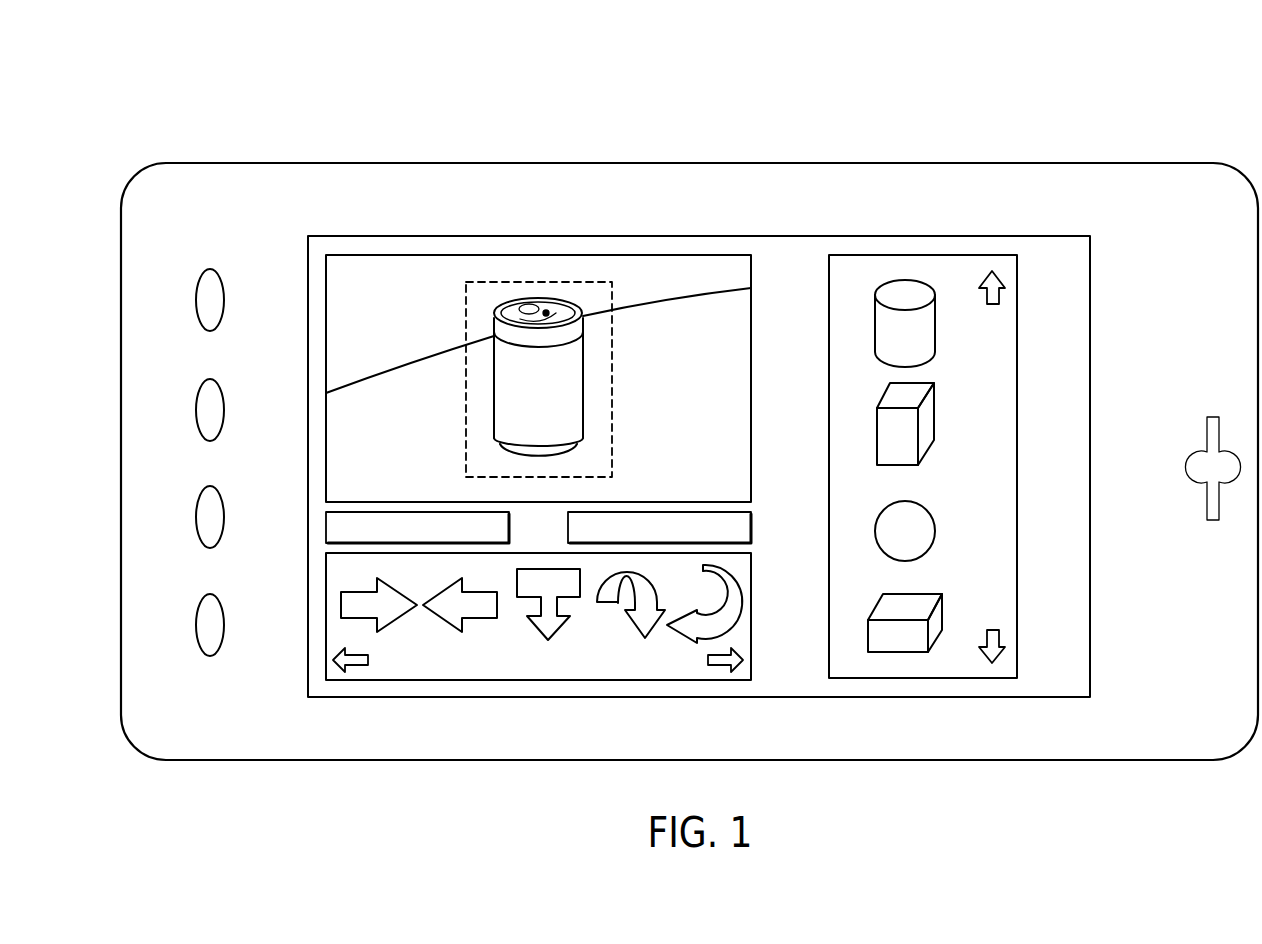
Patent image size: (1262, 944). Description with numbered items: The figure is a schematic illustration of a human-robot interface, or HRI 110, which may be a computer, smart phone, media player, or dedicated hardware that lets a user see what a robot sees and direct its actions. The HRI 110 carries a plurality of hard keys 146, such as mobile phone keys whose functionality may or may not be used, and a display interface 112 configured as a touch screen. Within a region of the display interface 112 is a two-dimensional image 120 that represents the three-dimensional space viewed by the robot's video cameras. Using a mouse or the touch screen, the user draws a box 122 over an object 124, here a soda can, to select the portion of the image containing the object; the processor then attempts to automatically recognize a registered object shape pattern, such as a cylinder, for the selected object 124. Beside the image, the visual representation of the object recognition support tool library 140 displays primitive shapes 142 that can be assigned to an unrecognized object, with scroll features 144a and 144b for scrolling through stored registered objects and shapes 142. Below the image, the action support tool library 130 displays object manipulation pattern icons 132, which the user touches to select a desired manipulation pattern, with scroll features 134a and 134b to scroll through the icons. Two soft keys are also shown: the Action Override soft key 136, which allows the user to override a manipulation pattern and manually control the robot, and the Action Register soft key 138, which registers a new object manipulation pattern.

The human-robot interface (HRI) 110 is at (671, 410).
The display interface 112 is at (719, 451).
The two-dimensional image 120 is at (588, 352).
The box 122 is at (462, 318).
The object 124 is at (583, 392).
The action support tool library 130 is at (538, 656).
The object manipulation pattern icons 132 is at (541, 651).
The scroll feature 134a is at (355, 672).
The scroll feature 134b is at (720, 675).
The Action Override soft key 136 is at (326, 524).
The Action Register soft key 138 is at (751, 528).
The object recognition support tool library 140 is at (987, 466).
The shapes 142 is at (971, 466).
The scroll feature 144a is at (1003, 298).
The scroll feature 144b is at (1003, 640).
The hard keys 146 is at (135, 434).